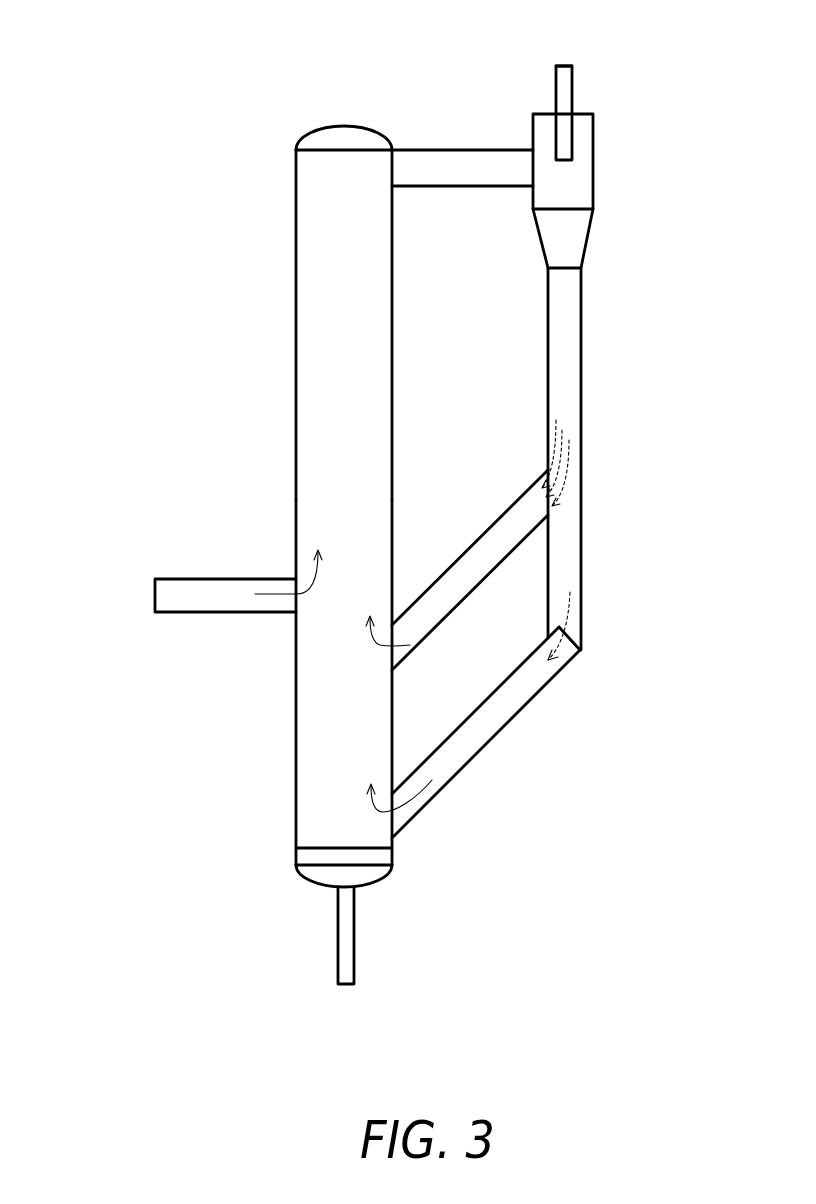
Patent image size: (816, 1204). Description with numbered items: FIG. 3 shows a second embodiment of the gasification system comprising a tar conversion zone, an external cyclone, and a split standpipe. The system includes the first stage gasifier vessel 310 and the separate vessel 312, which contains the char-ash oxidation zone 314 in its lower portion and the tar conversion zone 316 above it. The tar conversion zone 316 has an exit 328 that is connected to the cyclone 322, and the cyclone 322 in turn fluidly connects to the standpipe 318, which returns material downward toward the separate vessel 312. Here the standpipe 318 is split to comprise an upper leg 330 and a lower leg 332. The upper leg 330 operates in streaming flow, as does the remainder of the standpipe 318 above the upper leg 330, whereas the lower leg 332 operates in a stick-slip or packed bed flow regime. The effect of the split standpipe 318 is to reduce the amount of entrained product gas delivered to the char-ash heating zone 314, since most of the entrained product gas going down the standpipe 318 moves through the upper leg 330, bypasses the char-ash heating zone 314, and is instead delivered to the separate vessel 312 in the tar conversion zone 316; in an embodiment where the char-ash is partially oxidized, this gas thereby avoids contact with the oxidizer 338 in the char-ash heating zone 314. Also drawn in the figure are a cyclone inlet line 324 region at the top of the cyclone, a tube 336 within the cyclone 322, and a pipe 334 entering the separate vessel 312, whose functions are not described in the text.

The first stage gasifier vessel 310 is at (163, 603).
The separate vessel 312 is at (268, 440).
The char-ash oxidation zone 314 is at (320, 772).
The tar conversion zone 316 is at (343, 366).
The standpipe 318 is at (563, 357).
The cyclone 322 is at (562, 192).
The overhead outlet stream 324 is at (560, 64).
The exit 328 is at (385, 172).
The upper leg 330 is at (499, 547).
The lower leg 332 is at (487, 725).
The feed inlet pipe 334 is at (212, 595).
The separator outlet tube 336 is at (563, 83).
The oxidizer 338 is at (349, 917).